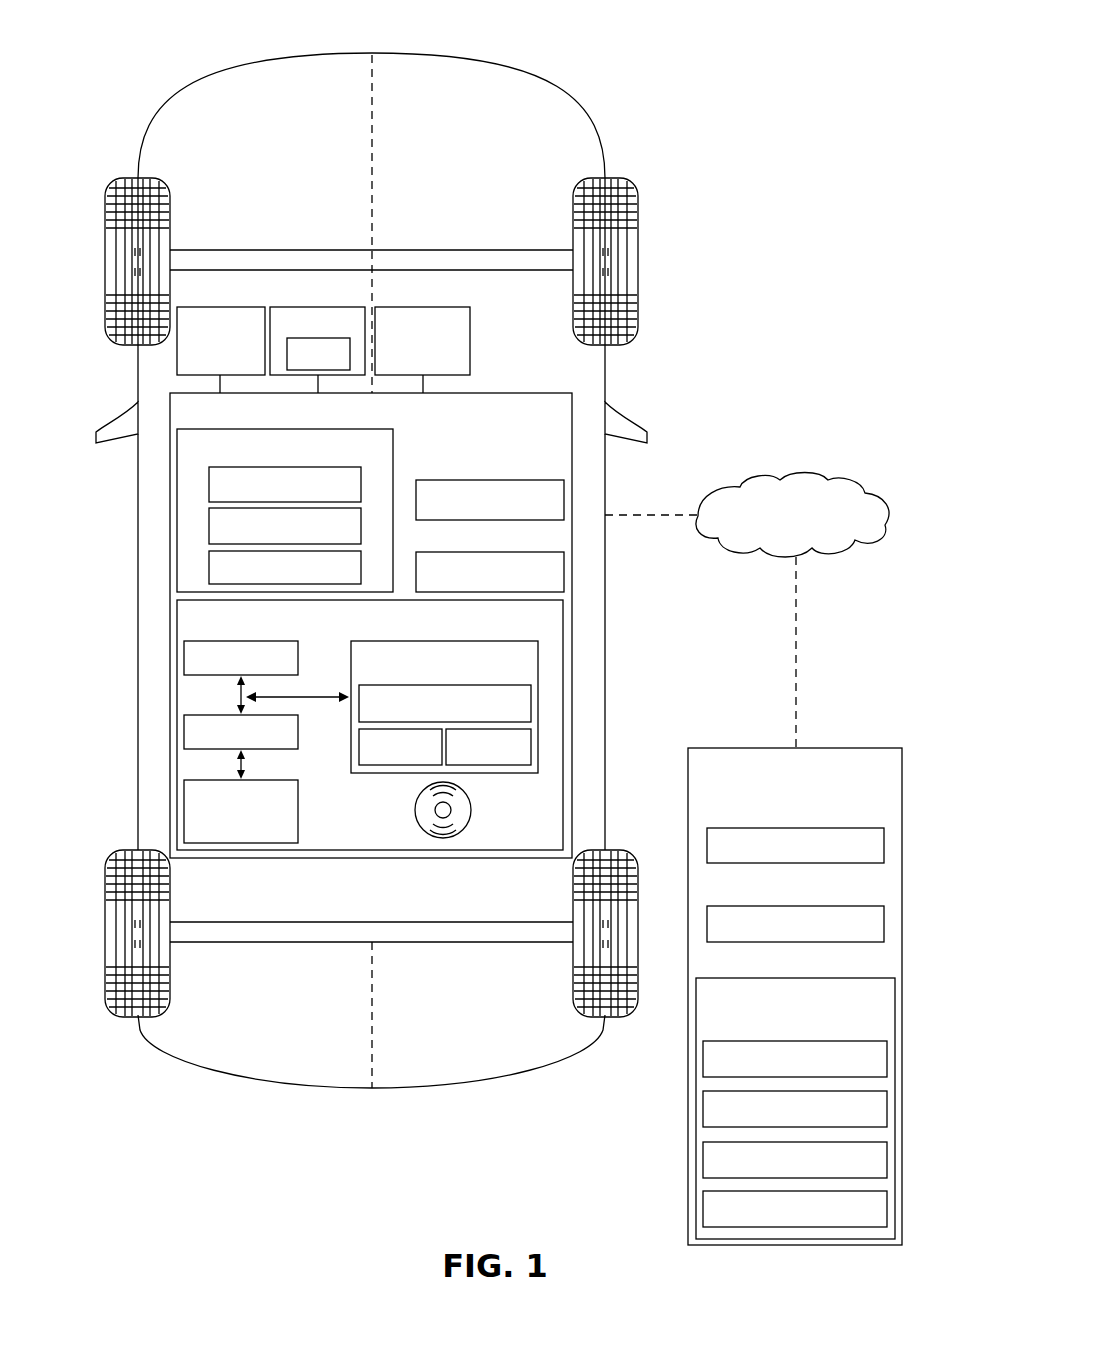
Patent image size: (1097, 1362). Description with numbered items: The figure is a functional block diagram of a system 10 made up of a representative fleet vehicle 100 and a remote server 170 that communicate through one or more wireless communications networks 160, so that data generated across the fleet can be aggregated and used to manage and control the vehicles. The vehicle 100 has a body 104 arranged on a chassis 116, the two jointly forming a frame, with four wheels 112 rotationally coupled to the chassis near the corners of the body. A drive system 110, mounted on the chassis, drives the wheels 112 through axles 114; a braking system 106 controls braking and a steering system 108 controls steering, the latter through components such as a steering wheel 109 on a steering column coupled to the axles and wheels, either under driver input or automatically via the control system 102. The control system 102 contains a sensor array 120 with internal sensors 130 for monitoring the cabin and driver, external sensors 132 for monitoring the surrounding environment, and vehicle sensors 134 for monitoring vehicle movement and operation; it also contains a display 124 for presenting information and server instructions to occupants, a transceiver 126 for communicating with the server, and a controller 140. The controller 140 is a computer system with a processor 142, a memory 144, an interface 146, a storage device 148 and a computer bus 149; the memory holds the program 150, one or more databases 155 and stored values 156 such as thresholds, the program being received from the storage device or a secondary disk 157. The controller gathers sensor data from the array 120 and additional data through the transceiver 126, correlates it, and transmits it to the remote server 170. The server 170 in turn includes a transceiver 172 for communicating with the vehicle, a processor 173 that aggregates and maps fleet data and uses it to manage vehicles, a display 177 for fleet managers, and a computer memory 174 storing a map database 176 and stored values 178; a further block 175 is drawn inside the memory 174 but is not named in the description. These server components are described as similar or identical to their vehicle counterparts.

The system 10 is at (604, 36).
The vehicle 100 is at (243, 85).
The control system 102 is at (572, 393).
The body 104 is at (140, 480).
The braking system 106 is at (240, 306).
The steering system 108 is at (340, 306).
The steering wheel 109 is at (352, 350).
The drive system 110 is at (428, 306).
The wheels 112 is at (137, 177).
The axles 114 is at (252, 255).
The chassis 116 is at (380, 101).
The sensor array 120 is at (177, 430).
The display 124 is at (566, 498).
The transceiver 126 is at (566, 570).
The internal sensors 130 is at (209, 485).
The external sensors 132 is at (209, 525).
The vehicle sensors 134 is at (209, 568).
The controller 140 is at (178, 622).
The processor 142 is at (185, 660).
The memory 144 is at (540, 655).
The interface 146 is at (185, 733).
The storage device 148 is at (185, 795).
The computer bus 149 is at (240, 697).
The program 150 is at (532, 700).
The databases 155 is at (400, 752).
The stored values 156 is at (532, 745).
The disk 157 is at (473, 810).
The communications networks 160 is at (832, 483).
The remote server 170 is at (834, 748).
The transceiver 172 is at (886, 846).
The processor 173 is at (886, 922).
The computer memory 174 is at (896, 1008).
The database 175 is at (888, 1057).
The map database 176 is at (888, 1111).
The display 177 is at (888, 1160).
The stored values 178 is at (888, 1210).